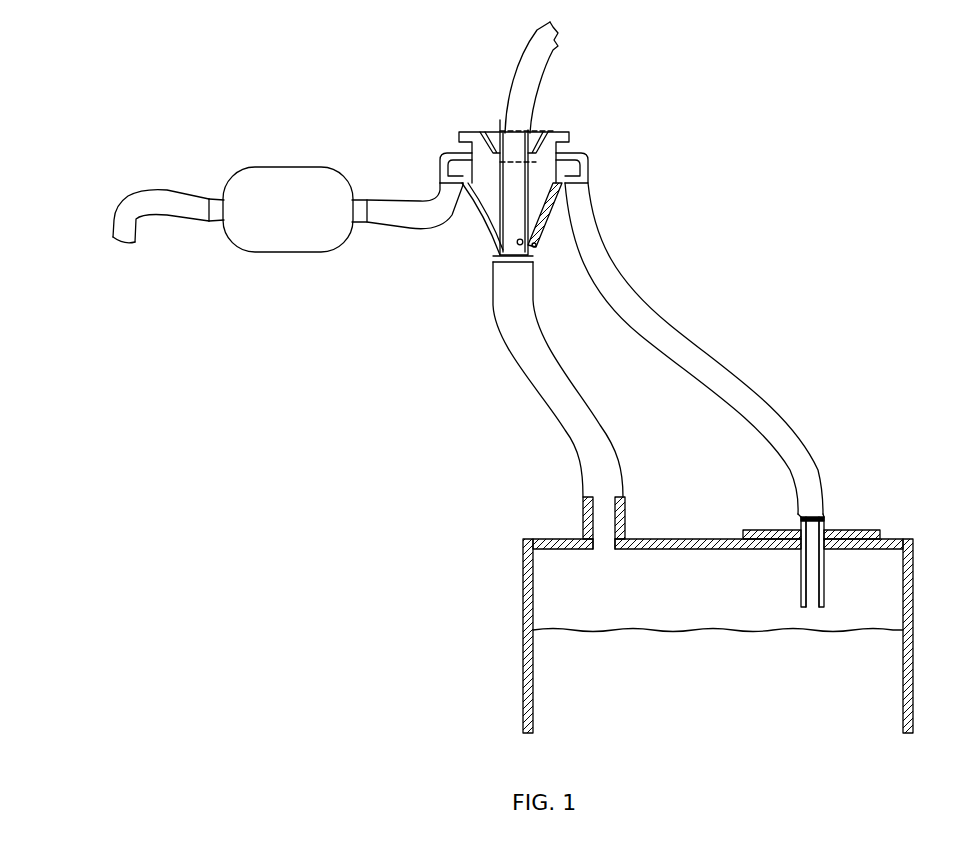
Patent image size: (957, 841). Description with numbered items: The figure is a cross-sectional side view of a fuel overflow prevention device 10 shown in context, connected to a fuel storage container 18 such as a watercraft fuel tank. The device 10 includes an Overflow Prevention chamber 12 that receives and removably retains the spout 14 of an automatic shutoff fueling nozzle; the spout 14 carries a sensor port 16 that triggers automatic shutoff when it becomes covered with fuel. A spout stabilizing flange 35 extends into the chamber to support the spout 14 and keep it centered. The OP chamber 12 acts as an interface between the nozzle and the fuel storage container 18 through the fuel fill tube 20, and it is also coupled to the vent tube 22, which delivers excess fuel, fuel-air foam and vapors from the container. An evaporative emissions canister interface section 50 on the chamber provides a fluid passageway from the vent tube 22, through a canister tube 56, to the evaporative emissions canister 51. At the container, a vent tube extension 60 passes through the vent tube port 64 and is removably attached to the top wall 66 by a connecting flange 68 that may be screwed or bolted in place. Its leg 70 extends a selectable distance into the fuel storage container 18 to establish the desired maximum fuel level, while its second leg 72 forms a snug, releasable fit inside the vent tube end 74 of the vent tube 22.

The fuel overflow prevention device 10 is at (832, 205).
The Overflow Prevention (OP) chamber 12 is at (534, 177).
The spout 14 is at (506, 90).
The sensor port 16 is at (537, 244).
The fuel storage container 18 is at (523, 586).
The fuel fill tube 20 is at (521, 376).
The vent tube 22 is at (714, 357).
The spout stabilizing flange 35 is at (545, 130).
The evaporative emissions canister interface section 50 is at (468, 230).
The evaporative emissions canister 51 is at (282, 253).
The canister tube 56 is at (392, 227).
The vent tube extension 60 is at (834, 527).
The vent tube port 64 is at (803, 552).
The top wall 66 is at (643, 539).
The connecting flange 68 is at (757, 530).
The leg 70 is at (824, 565).
The second leg 72 is at (823, 506).
The vent tube end 74 is at (797, 513).